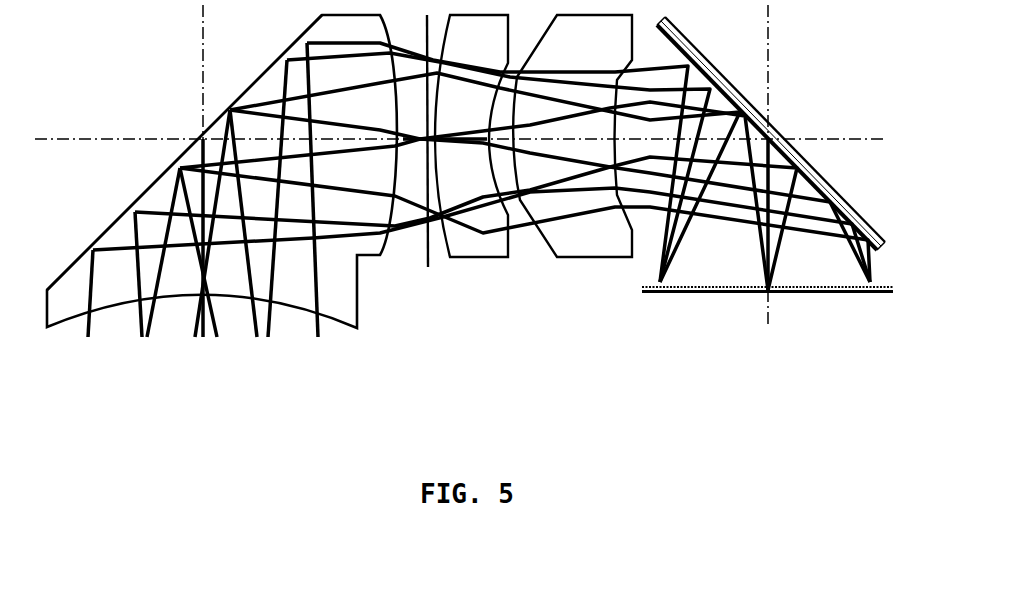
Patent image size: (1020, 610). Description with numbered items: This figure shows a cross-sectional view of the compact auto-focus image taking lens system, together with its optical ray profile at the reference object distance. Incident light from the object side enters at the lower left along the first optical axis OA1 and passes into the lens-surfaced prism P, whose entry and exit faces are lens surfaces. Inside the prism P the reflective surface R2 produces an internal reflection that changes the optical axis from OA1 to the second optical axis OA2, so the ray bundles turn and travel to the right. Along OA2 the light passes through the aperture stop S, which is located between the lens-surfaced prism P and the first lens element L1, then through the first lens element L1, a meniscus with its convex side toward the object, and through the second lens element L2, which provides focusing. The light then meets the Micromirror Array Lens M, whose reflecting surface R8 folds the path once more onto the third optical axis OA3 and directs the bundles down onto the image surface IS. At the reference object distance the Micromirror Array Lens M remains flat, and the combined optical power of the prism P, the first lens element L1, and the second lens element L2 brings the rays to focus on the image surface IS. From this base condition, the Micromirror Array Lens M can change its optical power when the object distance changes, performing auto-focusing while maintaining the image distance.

The lens-surfaced prism P is at (90, 260).
The reflective surface of the lens-surfaced prism R2 is at (222, 116).
The first optical axis OA1 is at (206, 326).
The second optical axis OA2 is at (106, 144).
The third optical axis OA3 is at (778, 320).
The aperture stop S is at (428, 266).
The first lens element L1 is at (480, 258).
The second lens element L2 is at (590, 258).
The Micromirror Array Lens M is at (710, 63).
The reflecting surface of the Micromirror Array Lens R8 is at (793, 157).
The image surface IS is at (845, 302).